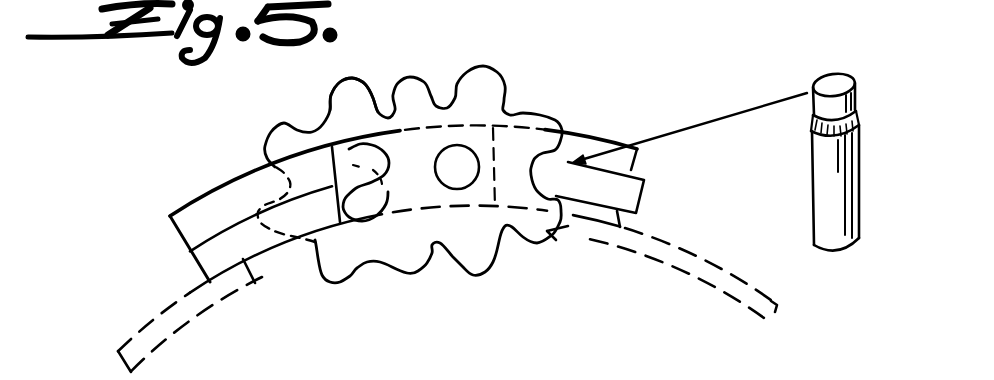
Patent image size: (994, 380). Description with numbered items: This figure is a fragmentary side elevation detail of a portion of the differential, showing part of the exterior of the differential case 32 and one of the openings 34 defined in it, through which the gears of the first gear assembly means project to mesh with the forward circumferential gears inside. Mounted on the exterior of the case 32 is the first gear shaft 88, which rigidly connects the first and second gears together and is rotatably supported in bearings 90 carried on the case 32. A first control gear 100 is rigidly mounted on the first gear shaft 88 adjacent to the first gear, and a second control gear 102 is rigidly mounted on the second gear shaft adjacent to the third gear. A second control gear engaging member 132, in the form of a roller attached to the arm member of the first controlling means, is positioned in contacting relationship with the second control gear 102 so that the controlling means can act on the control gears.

The differential case 32 is at (197, 337).
The openings 34 is at (282, 300).
The first gear shaft 88 is at (550, 105).
The bearings 90 is at (205, 205).
The first control gear 100 is at (472, 290).
The second control gear 102 is at (330, 100).
The second control gear engaging member 132 is at (820, 188).